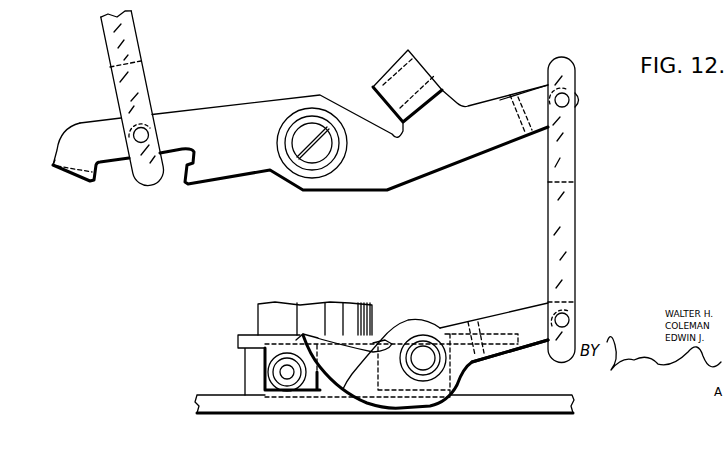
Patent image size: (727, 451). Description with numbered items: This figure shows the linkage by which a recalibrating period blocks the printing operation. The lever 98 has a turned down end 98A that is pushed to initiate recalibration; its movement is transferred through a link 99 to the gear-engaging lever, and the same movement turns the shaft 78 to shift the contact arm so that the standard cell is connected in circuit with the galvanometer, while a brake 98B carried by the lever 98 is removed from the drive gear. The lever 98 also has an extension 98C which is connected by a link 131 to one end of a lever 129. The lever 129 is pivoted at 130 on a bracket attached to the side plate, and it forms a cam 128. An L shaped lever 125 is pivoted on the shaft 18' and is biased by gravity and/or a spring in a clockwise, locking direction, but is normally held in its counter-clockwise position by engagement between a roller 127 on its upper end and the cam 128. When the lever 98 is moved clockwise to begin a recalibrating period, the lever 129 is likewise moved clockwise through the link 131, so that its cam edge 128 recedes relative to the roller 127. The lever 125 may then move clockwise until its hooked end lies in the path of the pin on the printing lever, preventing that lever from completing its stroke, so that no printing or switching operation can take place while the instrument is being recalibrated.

The lever 98 is at (200, 117).
The turned down end 98A is at (65, 168).
The brake 98B is at (384, 81).
The extension 98C is at (537, 97).
The link 99 is at (125, 37).
The shaft 78 is at (305, 133).
The link 131 is at (569, 225).
The lever 129 is at (526, 320).
The L shaped lever 125 is at (428, 356).
The pivot 130 is at (440, 333).
The cam 128 is at (380, 347).
The roller 127 is at (270, 375).
The shaft 18' is at (362, 347).